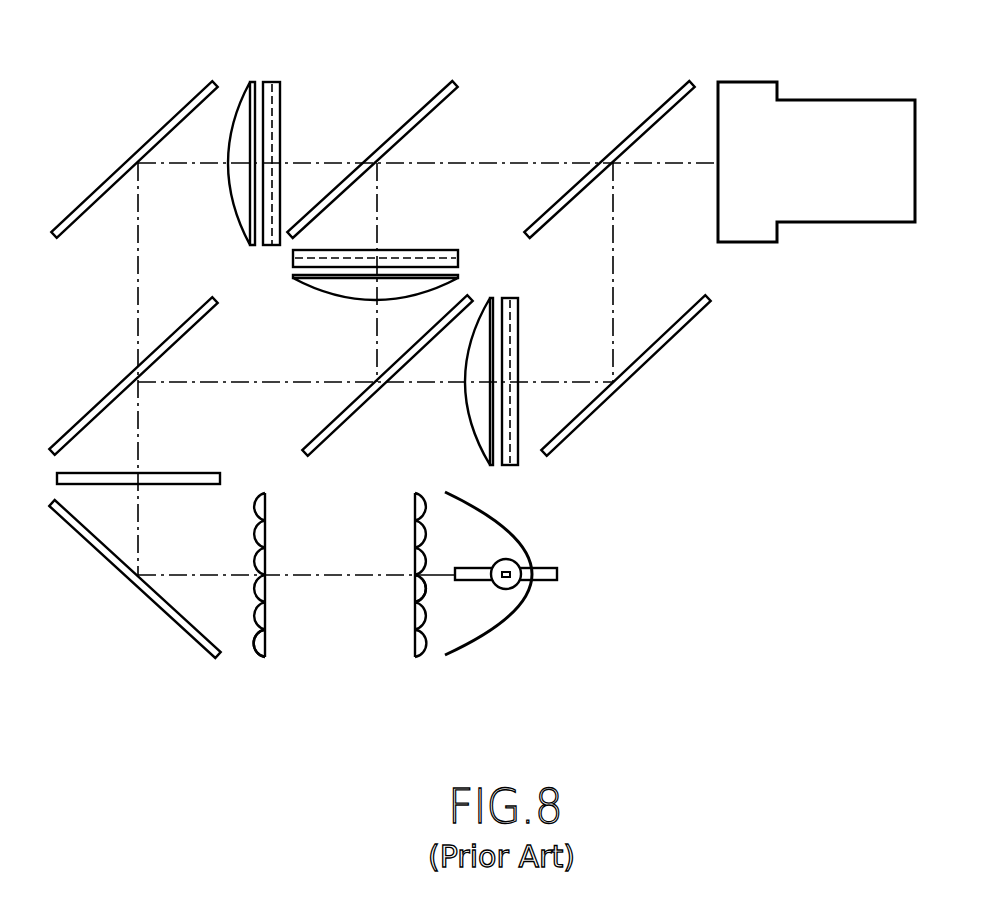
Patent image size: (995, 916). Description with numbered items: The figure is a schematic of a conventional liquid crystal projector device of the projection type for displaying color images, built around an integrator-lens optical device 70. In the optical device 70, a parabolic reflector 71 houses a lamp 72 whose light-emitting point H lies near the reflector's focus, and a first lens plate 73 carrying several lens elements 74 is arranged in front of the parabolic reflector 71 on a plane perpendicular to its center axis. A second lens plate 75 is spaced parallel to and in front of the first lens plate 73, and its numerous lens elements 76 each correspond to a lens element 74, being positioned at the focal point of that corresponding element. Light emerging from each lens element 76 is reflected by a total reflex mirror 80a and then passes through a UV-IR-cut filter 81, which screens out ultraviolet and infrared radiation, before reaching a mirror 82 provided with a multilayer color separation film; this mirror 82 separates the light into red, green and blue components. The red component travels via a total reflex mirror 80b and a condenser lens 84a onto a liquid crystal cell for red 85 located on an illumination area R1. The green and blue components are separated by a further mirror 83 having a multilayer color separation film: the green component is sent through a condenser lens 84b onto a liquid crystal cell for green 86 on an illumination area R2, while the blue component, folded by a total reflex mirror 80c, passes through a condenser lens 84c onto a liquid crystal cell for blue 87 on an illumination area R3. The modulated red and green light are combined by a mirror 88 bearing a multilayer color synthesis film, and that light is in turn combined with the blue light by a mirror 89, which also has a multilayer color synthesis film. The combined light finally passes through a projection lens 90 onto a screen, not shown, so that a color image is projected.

The optical device 70 is at (505, 600).
The parabolic reflector 71 is at (487, 633).
The lamp 72 is at (525, 569).
The light emitting point H is at (505, 580).
The first lens plate 73 is at (390, 607).
The lens element 74 is at (415, 587).
The second lens plate 75 is at (288, 608).
The lens element 76 is at (267, 637).
The total reflex mirror 80a is at (135, 590).
The total reflex mirror 80b is at (73, 235).
The total reflex mirror 80c is at (600, 408).
The UV-IR-cut filter 81 is at (197, 472).
The mirror 82 is at (90, 413).
The mirror 83 is at (310, 430).
The condenser lens 84a is at (250, 82).
The condenser lens 84b is at (307, 296).
The condenser lens 84c is at (470, 428).
The liquid crystal cell for red 85 is at (302, 135).
The liquid crystal cell for green 86 is at (343, 245).
The liquid crystal cell for blue 87 is at (537, 365).
The mirror 88 is at (450, 80).
The mirror 89 is at (690, 80).
The projection lens 90 is at (843, 222).
The illumination area R1 is at (273, 110).
The illumination area R2 is at (293, 258).
The illumination area R3 is at (510, 343).